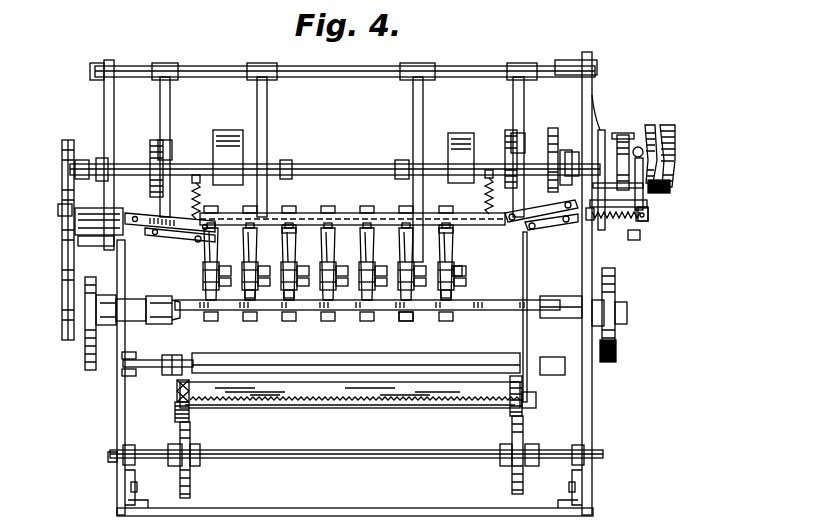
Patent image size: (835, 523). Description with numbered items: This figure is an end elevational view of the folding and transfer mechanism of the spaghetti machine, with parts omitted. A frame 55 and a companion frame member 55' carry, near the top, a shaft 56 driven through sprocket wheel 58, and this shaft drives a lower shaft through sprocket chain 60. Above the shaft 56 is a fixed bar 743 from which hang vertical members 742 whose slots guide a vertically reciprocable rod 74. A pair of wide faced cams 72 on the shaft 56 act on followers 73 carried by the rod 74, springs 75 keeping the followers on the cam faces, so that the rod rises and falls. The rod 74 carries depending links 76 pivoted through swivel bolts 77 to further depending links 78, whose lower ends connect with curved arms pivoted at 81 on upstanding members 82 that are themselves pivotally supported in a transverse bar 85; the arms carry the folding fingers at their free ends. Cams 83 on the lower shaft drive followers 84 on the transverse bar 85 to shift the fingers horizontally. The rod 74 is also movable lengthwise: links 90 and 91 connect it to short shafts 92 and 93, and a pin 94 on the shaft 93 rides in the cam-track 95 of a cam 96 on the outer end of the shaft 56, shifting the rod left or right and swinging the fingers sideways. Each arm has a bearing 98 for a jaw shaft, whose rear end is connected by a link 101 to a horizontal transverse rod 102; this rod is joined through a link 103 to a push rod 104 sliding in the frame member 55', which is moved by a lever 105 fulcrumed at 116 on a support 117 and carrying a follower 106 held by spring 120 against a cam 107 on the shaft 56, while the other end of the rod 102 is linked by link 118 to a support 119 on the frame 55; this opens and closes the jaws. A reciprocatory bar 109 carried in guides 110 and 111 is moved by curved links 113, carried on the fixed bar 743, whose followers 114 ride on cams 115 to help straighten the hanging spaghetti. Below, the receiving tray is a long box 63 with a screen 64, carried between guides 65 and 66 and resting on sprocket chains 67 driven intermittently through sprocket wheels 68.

The frame 55 is at (337, 288).
The frame member 55' is at (604, 283).
The shaft 56 is at (331, 164).
The sprocket wheel 58 is at (567, 150).
The sprocket chain 60 is at (75, 214).
The long box 63 is at (286, 408).
The screen 64 is at (383, 401).
The guide 65 is at (177, 400).
The guide 66 is at (536, 404).
The sprocket chains 67 is at (189, 418).
The sprocket wheels 68 is at (190, 493).
The wide faced cams 72 is at (228, 130).
The followers 73 is at (292, 213).
The vertically reciprocable rod 74 is at (335, 213).
The springs 75 is at (196, 175).
The depending links 76 is at (205, 240).
The swivel bolts 77 is at (208, 262).
The depending links 78 is at (208, 284).
The pivot 81 is at (418, 321).
The upstanding members 82 is at (250, 298).
The cams 83 is at (68, 340).
The followers 84 is at (97, 350).
The transverse bar 85 is at (490, 310).
The link 90 is at (148, 213).
The link 91 is at (550, 140).
The short shaft 92 is at (60, 207).
The short shaft 93 is at (648, 214).
The pin 94 is at (643, 186).
The cam-track 95 is at (653, 125).
The cam 96 is at (675, 150).
The bearing 98 is at (462, 270).
The link 101 is at (525, 232).
The horizontal transverse rod 102 is at (160, 240).
The link 103 is at (623, 222).
The push rod 104 is at (648, 220).
The lever 105 is at (647, 204).
The follower 106 is at (638, 147).
The cam 107 is at (613, 133).
The reciprocatory bar 109 is at (160, 362).
The guide 110 is at (131, 352).
The guide 111 is at (527, 389).
The curved links 113 is at (170, 104).
The followers 114 is at (166, 153).
The cams 115 is at (150, 160).
The fulcrum 116 is at (670, 186).
The support 117 is at (598, 90).
The link 118 is at (120, 268).
The support 119 is at (85, 246).
The spring 120 is at (638, 240).
The vertical members 742 is at (268, 105).
The fixed bar 743 is at (455, 66).